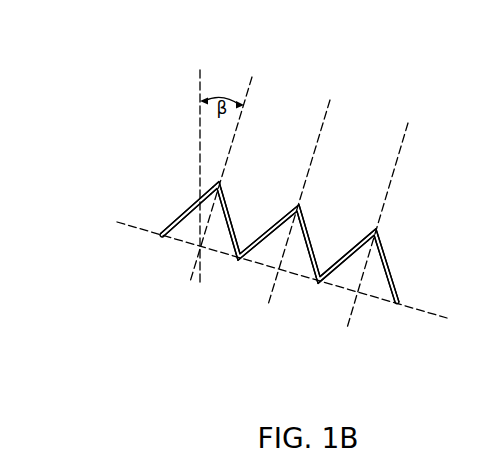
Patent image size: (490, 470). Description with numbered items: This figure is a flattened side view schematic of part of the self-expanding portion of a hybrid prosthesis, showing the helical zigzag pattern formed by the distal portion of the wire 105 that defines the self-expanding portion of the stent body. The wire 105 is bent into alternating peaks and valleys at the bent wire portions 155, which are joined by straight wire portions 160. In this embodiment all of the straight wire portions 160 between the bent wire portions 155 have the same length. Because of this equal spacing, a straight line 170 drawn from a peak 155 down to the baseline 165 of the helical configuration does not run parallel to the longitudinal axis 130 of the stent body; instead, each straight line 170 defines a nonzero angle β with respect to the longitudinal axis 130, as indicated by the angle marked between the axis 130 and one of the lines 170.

The wire 105 is at (395, 293).
The longitudinal axis 130 is at (202, 72).
The bent wire portions 155 is at (222, 183).
The straight wire portions 160 is at (187, 213).
The baseline 165 is at (420, 312).
The straight line 170 is at (247, 93).